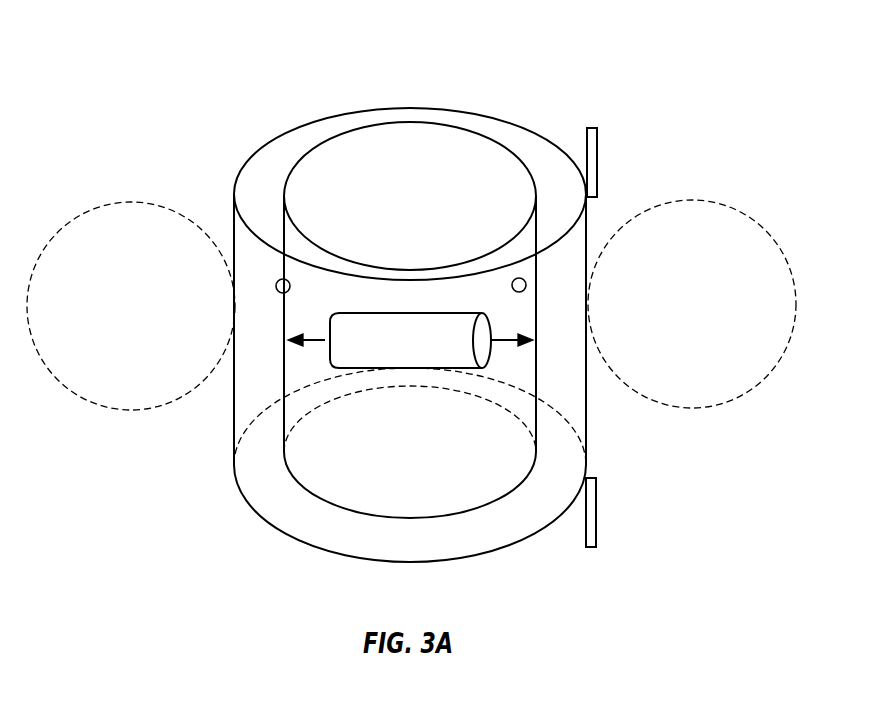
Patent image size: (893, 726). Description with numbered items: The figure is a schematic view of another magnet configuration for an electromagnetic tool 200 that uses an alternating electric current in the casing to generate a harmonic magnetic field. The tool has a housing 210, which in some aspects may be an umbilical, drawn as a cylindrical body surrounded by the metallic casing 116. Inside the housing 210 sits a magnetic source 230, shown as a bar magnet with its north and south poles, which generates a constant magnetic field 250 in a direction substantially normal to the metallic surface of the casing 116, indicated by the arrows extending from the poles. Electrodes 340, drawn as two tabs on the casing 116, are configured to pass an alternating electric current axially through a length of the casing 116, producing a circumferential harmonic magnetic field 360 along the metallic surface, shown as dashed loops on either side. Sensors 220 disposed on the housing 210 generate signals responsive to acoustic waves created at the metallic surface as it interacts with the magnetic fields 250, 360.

The electromagnetic tool 200 is at (278, 106).
The casing 116 is at (300, 548).
The housing 210 is at (536, 220).
The sensors 220 is at (276, 285).
The magnetic source 230 is at (483, 312).
The constant magnetic field 250 is at (509, 341).
The electrodes 340 is at (597, 150).
The circumferential harmonic magnetic field 360 is at (122, 410).